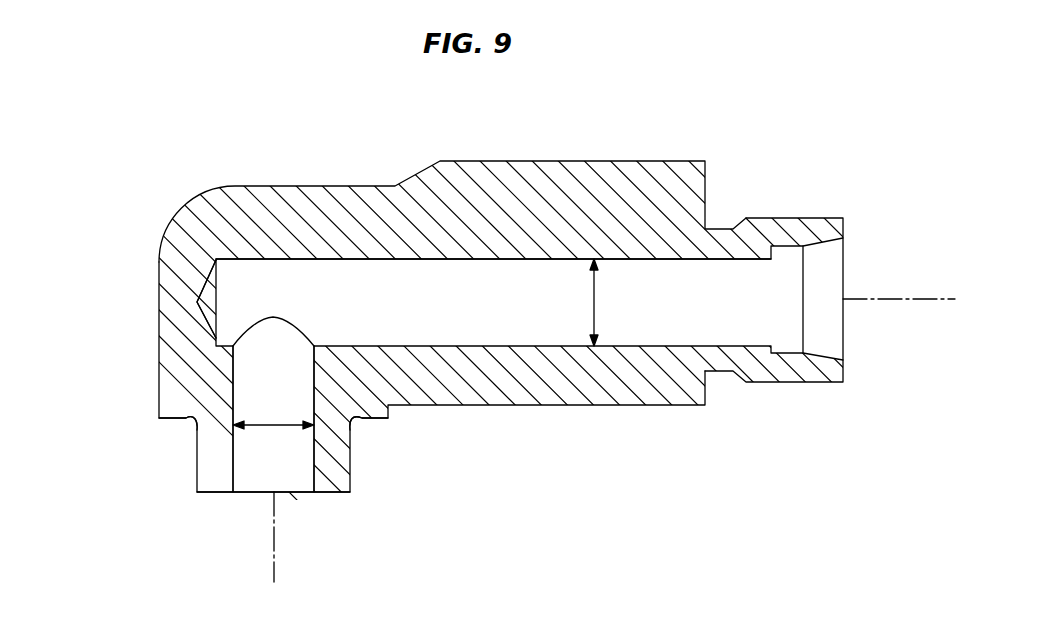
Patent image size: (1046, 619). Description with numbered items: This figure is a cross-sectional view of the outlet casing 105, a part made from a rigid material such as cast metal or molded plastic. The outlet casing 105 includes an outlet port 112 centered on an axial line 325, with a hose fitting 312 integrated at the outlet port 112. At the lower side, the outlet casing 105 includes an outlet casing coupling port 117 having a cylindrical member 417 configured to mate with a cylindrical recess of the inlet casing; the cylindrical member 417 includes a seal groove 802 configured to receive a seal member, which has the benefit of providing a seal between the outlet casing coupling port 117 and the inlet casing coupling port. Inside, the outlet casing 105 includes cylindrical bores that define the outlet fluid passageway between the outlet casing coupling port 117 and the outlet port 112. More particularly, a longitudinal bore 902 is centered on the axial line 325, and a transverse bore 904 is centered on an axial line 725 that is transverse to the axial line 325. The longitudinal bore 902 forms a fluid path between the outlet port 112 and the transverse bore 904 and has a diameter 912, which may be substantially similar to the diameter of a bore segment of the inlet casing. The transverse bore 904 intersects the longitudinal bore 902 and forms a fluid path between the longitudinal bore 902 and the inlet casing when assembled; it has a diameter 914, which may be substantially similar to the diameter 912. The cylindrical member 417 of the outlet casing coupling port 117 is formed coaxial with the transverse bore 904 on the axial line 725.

The outlet casing 105 is at (523, 340).
The outlet port 112 is at (645, 161).
The hose fitting 312 is at (803, 218).
The axial line 325 is at (925, 299).
The longitudinal bore 902 is at (473, 260).
The diameter of longitudinal bore 912 is at (590, 300).
The transverse bore 904 is at (230, 390).
The diameter of transverse bore 914 is at (265, 422).
The seal groove 802 is at (188, 417).
The cylindrical member 417 is at (350, 452).
The outlet casing coupling port 117 is at (208, 513).
The axial line 725 is at (275, 532).